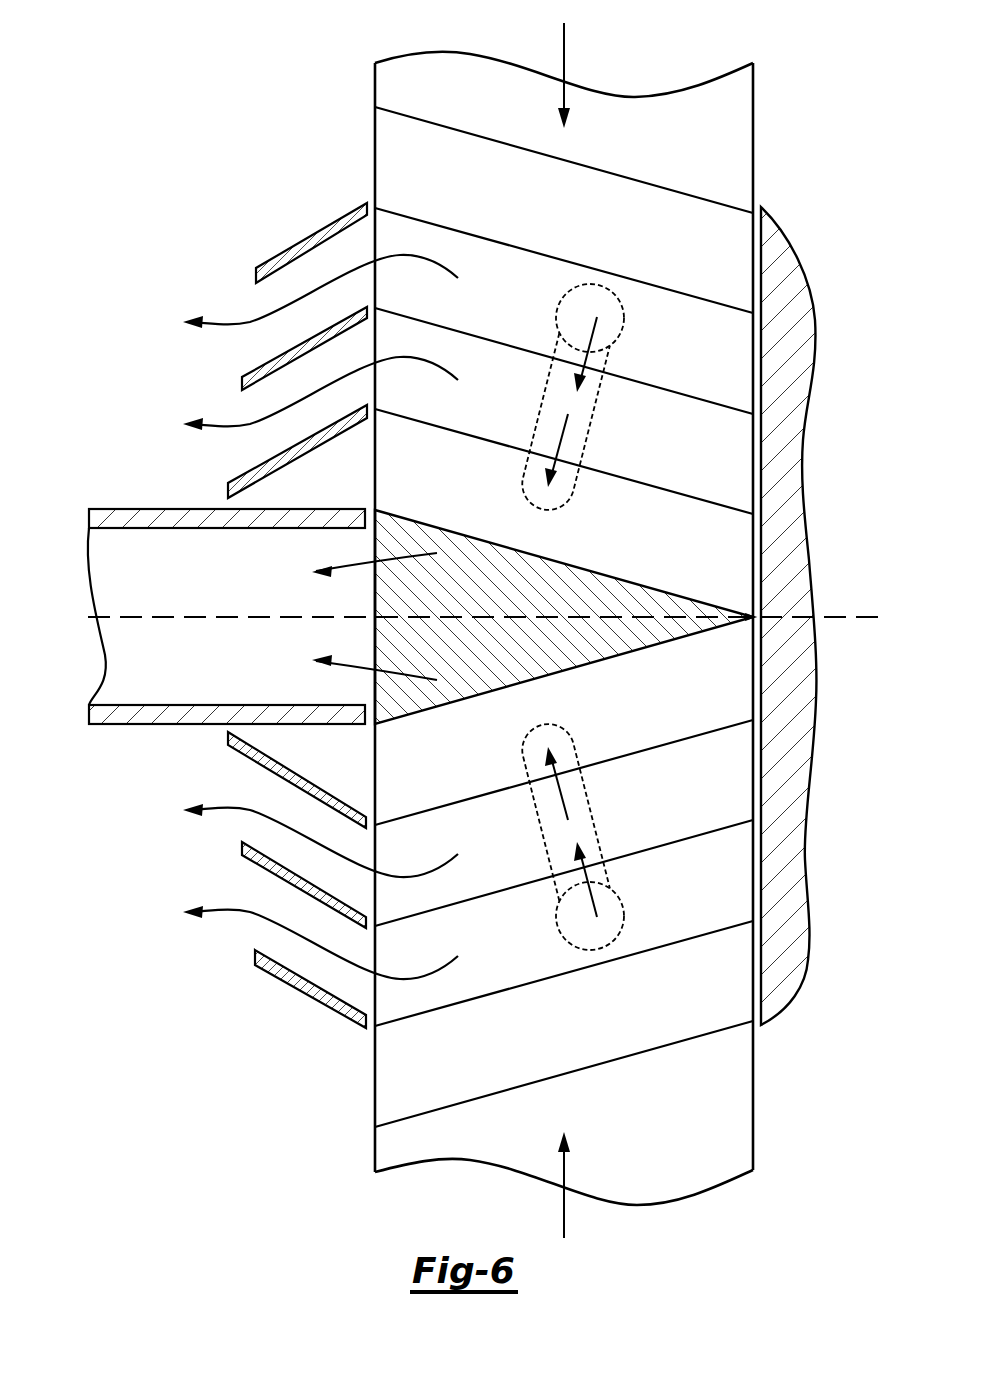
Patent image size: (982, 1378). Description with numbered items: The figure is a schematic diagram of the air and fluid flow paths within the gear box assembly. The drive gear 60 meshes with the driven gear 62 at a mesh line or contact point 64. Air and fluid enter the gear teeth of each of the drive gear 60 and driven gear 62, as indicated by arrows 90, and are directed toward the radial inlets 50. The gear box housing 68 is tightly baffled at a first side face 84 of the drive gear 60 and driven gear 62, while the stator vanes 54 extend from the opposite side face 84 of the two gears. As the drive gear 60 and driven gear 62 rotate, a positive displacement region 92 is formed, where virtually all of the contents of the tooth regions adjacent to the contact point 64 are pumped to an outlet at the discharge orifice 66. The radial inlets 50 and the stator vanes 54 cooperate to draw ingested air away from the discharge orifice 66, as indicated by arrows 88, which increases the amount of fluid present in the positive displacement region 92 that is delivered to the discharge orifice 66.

The radial inlet 50 is at (607, 405).
The stator vane 54 is at (297, 244).
The drive gear 60 is at (677, 1025).
The driven gear 62 is at (640, 203).
The mesh line or contact point 64 is at (750, 622).
The discharge orifice 66 is at (230, 657).
The gear box housing 68 is at (790, 923).
The side face 84 is at (375, 135).
The arrows indicating air drawn away 88 is at (216, 325).
The arrows indicating entering air and fluid 90 is at (564, 48).
The positive displacement region 92 is at (582, 644).